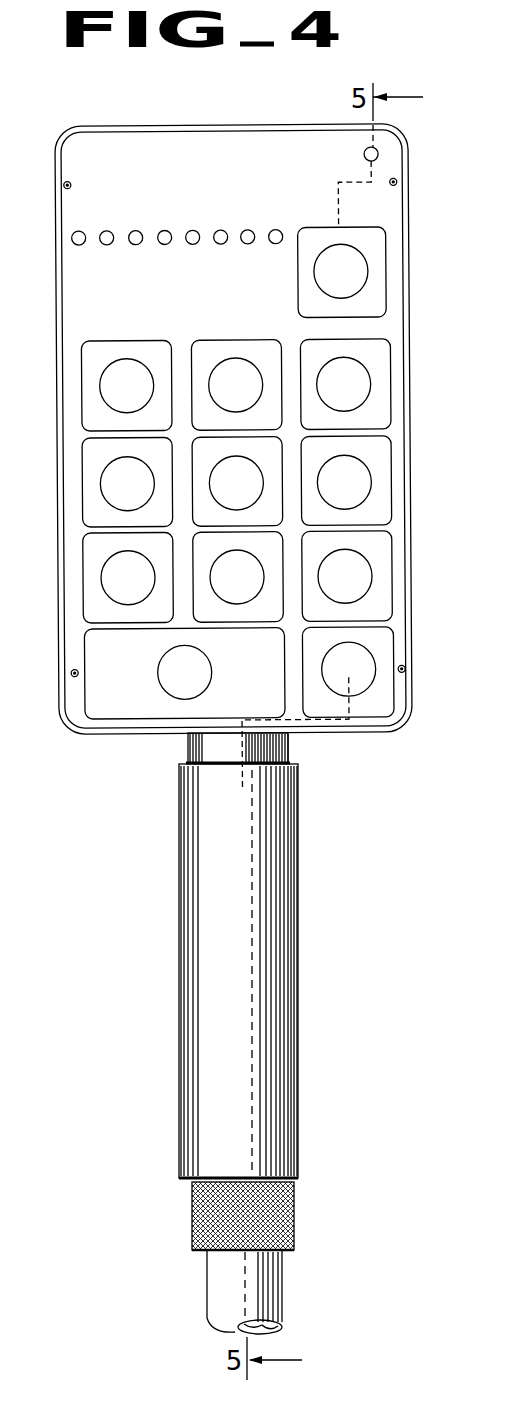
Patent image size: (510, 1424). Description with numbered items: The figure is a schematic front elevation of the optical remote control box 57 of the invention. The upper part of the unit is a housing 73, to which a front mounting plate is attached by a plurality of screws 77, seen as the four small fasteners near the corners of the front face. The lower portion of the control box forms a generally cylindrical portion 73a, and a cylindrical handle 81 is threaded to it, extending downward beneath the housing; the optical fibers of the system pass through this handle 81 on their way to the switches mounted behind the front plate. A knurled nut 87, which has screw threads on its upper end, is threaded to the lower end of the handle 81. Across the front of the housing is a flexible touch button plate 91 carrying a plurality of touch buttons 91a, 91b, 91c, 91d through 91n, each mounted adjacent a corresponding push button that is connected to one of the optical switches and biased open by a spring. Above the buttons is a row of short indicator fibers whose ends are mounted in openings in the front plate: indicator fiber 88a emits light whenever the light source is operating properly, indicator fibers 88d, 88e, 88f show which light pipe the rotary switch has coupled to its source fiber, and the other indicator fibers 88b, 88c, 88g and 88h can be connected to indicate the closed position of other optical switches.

The remote control box 57 is at (411, 143).
The housing 73 is at (125, 128).
The cylindrical portion 73a is at (290, 747).
The screws 77 is at (66, 183).
The cylindrical handle 81 is at (298, 952).
The knurled nut 87 is at (295, 1213).
The indicator fiber 88a is at (366, 155).
The indicator fiber 88b is at (83, 243).
The indicator fiber 88c is at (109, 230).
The indicator fiber 88d is at (137, 244).
The indicator fiber 88e is at (166, 230).
The indicator fiber 88f is at (195, 244).
The indicator fiber 88g is at (222, 230).
The indicator fiber 88h is at (281, 232).
The flexible touch button plate 91 is at (203, 146).
The touch button 91a is at (335, 672).
The touch button 91b is at (332, 587).
The touch button 91c is at (332, 493).
The touch button 91d is at (330, 282).
The touch button 91n is at (332, 395).